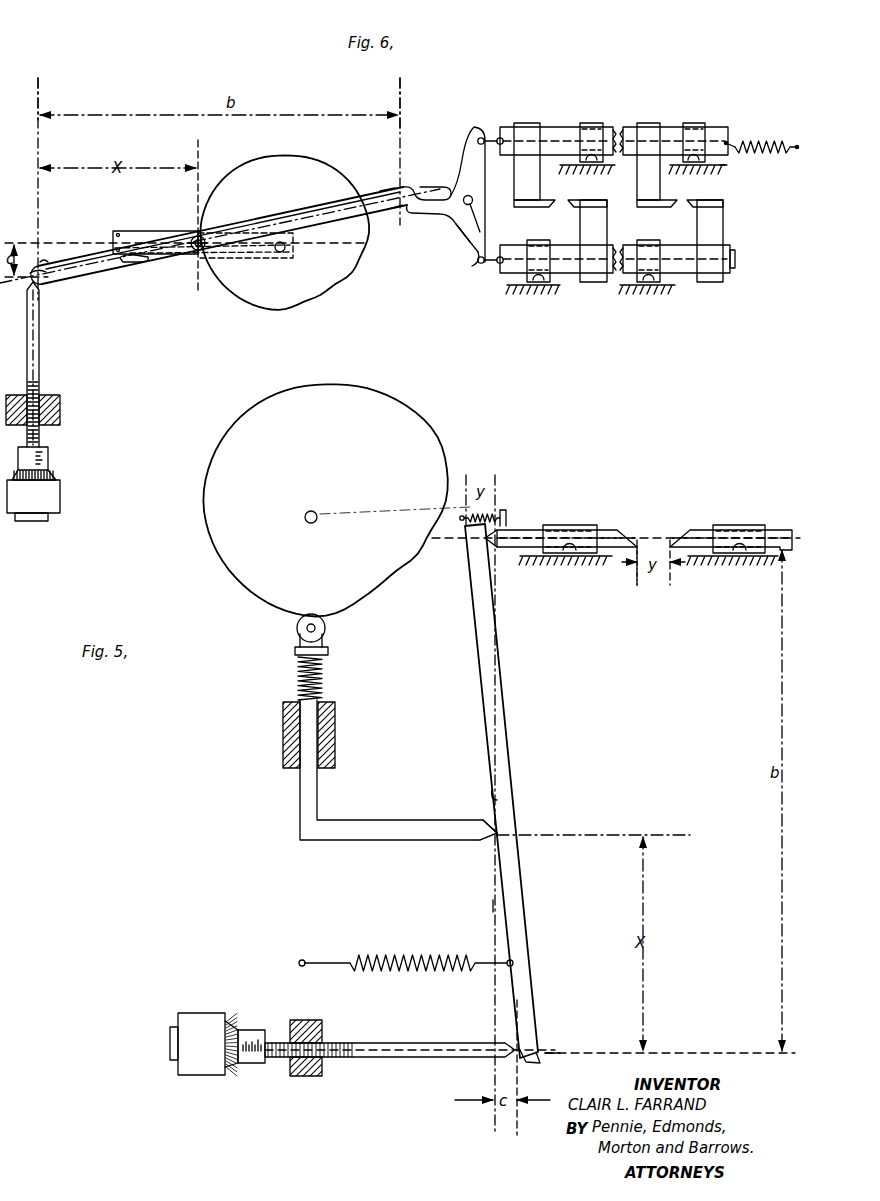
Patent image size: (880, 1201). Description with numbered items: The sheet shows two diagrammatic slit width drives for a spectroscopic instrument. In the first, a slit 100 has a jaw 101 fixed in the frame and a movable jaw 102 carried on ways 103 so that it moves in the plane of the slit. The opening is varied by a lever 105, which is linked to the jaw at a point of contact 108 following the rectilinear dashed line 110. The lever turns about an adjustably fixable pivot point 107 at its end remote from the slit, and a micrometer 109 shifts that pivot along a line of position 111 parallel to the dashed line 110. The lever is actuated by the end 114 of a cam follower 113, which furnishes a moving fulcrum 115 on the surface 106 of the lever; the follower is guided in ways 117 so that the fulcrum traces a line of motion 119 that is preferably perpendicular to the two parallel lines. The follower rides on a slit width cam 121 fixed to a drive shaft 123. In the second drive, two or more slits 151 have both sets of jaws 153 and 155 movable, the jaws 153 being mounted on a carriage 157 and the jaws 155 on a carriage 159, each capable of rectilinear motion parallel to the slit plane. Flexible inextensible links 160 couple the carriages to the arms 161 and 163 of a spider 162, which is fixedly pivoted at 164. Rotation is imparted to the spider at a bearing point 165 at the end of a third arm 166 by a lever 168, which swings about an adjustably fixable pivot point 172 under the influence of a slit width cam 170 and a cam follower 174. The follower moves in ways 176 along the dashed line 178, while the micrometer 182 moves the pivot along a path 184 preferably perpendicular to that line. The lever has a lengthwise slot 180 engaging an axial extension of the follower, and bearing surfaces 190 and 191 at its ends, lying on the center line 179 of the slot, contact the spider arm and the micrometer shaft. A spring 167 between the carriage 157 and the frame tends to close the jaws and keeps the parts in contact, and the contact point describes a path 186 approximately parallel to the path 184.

In FIG. 5, the slit 100 is at (660, 536).
In FIG. 5, the fixed jaw 101 is at (701, 530).
In FIG. 5, the movable jaw 102 is at (605, 530).
In FIG. 5, the ways 103 is at (561, 525).
In FIG. 5, the lever 105 is at (482, 633).
In FIG. 5, the lever surface 106 is at (497, 793).
In FIG. 5, the pivot point 107 is at (536, 1063).
In FIG. 5, the point of contact 108 is at (490, 543).
In FIG. 5, the micrometer 109 is at (208, 1017).
In FIG. 5, the dashed line 110 is at (447, 540).
In FIG. 6, the line of position 111 is at (727, 171).
In FIG. 5, the line of position 111 is at (562, 1053).
In FIG. 5, the cam follower 113 is at (378, 821).
In FIG. 5, the cam follower end 114 is at (494, 830).
In FIG. 5, the moving fulcrum 115 is at (494, 838).
In FIG. 5, the ways 117 is at (335, 747).
In FIG. 5, the line of motion 119 is at (494, 906).
In FIG. 5, the slit width cam 121 is at (441, 438).
In FIG. 5, the drive shaft 123 is at (331, 505).
In FIG. 6, the slits 151 is at (561, 200).
In FIG. 6, the jaws 153 is at (548, 208).
In FIG. 6, the jaws 155 is at (573, 210).
In FIG. 6, the carriage 157 is at (552, 127).
In FIG. 6, the carriage 159 is at (576, 273).
In FIG. 6, the flexible inextensible links 160 is at (484, 136).
In FIG. 6, the spider arm 161 is at (472, 126).
In FIG. 6, the spider 162 is at (462, 253).
In FIG. 6, the spider arm 163 is at (482, 266).
In FIG. 6, the spider pivot 164 is at (478, 230).
In FIG. 6, the bearing point 165 is at (420, 193).
In FIG. 6, the third arm 166 is at (442, 228).
In FIG. 6, the spring 167 is at (776, 143).
In FIG. 6, the lever 168 is at (384, 190).
In FIG. 6, the slit width cam 170 is at (249, 306).
In FIG. 6, the pivot point 172 is at (30, 289).
In FIG. 6, the cam follower 174 is at (192, 259).
In FIG. 6, the ways 176 is at (122, 247).
In FIG. 6, the cam follower path 178 is at (48, 242).
In FIG. 6, the center line 179 is at (88, 272).
In FIG. 6, the lengthwise slot 180 is at (140, 263).
In FIG. 6, the micrometer 182 is at (60, 512).
In FIG. 6, the pivot path 184 is at (40, 204).
In FIG. 6, the contact point path 186 is at (402, 140).
In FIG. 6, the bearing surface 190 is at (389, 208).
In FIG. 6, the bearing surface 191 is at (52, 259).